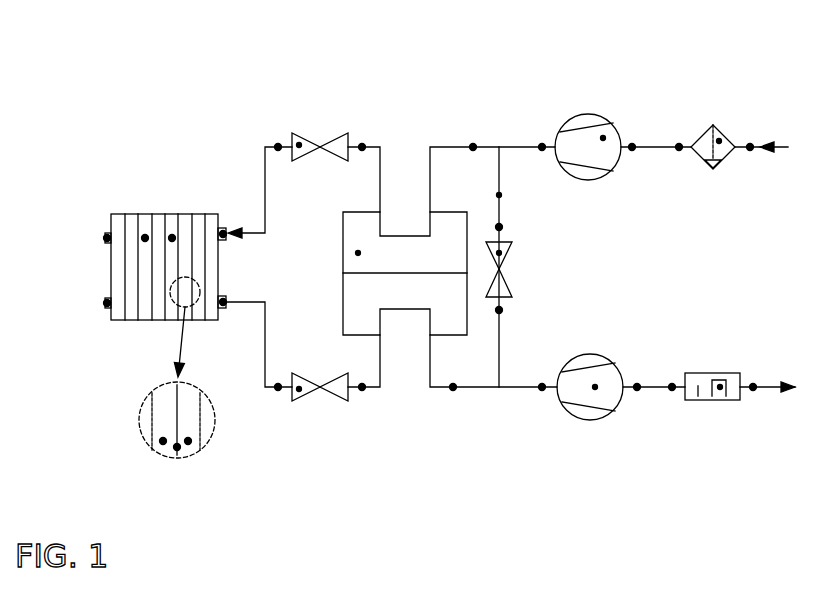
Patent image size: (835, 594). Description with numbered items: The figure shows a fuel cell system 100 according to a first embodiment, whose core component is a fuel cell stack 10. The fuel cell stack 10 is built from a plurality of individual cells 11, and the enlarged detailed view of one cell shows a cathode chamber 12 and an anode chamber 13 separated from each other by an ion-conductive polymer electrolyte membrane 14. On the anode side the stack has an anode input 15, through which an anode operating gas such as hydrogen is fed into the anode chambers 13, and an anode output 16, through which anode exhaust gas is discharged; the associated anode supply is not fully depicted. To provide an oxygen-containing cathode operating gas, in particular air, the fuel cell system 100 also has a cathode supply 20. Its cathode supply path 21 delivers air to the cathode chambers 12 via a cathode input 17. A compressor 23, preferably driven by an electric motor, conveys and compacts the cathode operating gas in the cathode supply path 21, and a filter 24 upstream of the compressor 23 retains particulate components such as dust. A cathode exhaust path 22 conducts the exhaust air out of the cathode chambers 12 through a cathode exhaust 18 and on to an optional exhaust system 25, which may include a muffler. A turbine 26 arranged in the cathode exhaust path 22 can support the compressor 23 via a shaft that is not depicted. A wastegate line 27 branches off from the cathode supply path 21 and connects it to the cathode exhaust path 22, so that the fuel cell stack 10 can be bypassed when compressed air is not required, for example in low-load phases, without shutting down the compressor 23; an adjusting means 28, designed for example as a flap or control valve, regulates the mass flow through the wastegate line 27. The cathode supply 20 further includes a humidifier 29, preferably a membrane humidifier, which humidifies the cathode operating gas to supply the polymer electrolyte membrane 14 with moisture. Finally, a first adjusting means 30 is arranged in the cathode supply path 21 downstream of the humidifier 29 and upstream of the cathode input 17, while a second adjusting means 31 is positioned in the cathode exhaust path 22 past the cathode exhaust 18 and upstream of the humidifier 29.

The fuel cell system 100 is at (212, 82).
The fuel cell stack 10 is at (170, 158).
The individual cells 11 is at (172, 238).
The cathode chamber 12 is at (188, 441).
The anode chamber 13 is at (163, 441).
The ion-conductive polymer electrolyte membrane 14 is at (177, 447).
The anode input 15 is at (105, 237).
The anode output 16 is at (105, 304).
The cathode input 17 is at (223, 232).
The cathode exhaust 18 is at (223, 304).
The cathode supply 20 is at (550, 94).
The cathode supply path 21 is at (474, 145).
The cathode exhaust path 22 is at (452, 389).
The compressor 23 is at (603, 138).
The filter 24 is at (719, 141).
The exhaust system 25 is at (720, 387).
The turbine 26 is at (595, 387).
The wastegate line 27 is at (499, 195).
The adjusting means 28 is at (500, 254).
The humidifier 29 is at (358, 253).
The first adjusting means 30 is at (299, 145).
The second adjusting means 31 is at (299, 389).